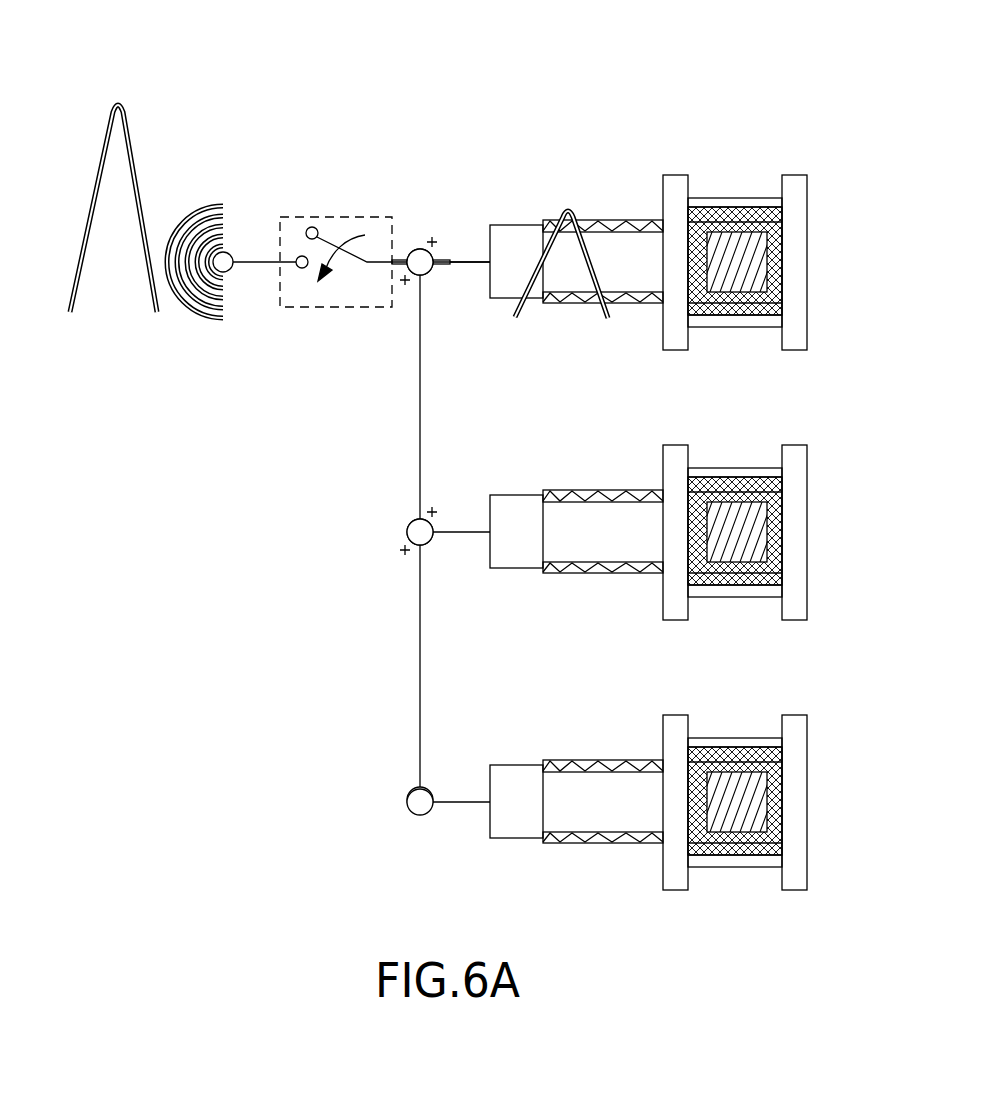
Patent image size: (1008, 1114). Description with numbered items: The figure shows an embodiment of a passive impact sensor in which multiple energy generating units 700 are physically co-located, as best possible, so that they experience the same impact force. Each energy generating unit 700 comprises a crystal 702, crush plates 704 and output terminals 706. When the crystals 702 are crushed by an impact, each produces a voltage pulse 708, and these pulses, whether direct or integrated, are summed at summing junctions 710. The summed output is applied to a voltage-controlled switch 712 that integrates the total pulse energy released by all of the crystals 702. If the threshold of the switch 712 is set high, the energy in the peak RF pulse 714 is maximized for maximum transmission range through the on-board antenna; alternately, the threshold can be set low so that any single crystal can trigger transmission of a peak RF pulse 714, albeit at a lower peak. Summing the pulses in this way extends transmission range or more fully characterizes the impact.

The energy generating unit 700 is at (636, 448).
The crystal 702 is at (745, 283).
The crush plates 704 is at (795, 173).
The output terminals 706 is at (634, 219).
The voltage pulse 708 is at (533, 252).
The summing junction 710 is at (355, 308).
The voltage-controlled switch 712 is at (322, 216).
The peak RF pulse 714 is at (135, 135).